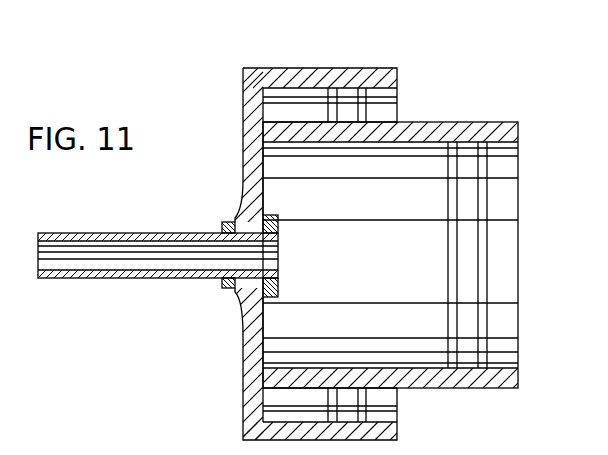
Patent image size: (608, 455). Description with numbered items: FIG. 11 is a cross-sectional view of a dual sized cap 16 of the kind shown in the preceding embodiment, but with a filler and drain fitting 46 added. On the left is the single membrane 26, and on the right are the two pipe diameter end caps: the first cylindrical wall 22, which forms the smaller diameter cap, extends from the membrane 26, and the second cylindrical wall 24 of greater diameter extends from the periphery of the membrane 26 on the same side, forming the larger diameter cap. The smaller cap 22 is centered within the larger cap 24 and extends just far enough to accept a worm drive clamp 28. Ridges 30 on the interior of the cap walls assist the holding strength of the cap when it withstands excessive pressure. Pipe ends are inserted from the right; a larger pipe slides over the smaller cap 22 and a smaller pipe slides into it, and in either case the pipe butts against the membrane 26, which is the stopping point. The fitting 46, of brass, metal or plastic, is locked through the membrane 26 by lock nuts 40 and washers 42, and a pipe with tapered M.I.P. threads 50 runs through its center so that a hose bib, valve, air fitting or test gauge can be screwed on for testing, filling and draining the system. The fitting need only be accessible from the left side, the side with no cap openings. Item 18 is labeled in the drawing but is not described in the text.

The dual sized cap 16 is at (135, 82).
The fluid conduit 18 is at (570, 454).
The first cylindrical wall 22 is at (445, 120).
The second cylindrical wall 24 is at (302, 67).
The single membrane 26 is at (247, 134).
The worm drive clamp 28 is at (396, 6).
The ridges 30 is at (483, 228).
The lock nut 40 is at (217, 231).
The washer 42 is at (232, 224).
The fitting 46 is at (98, 280).
The tapered M.I.P. thread 50 is at (53, 242).